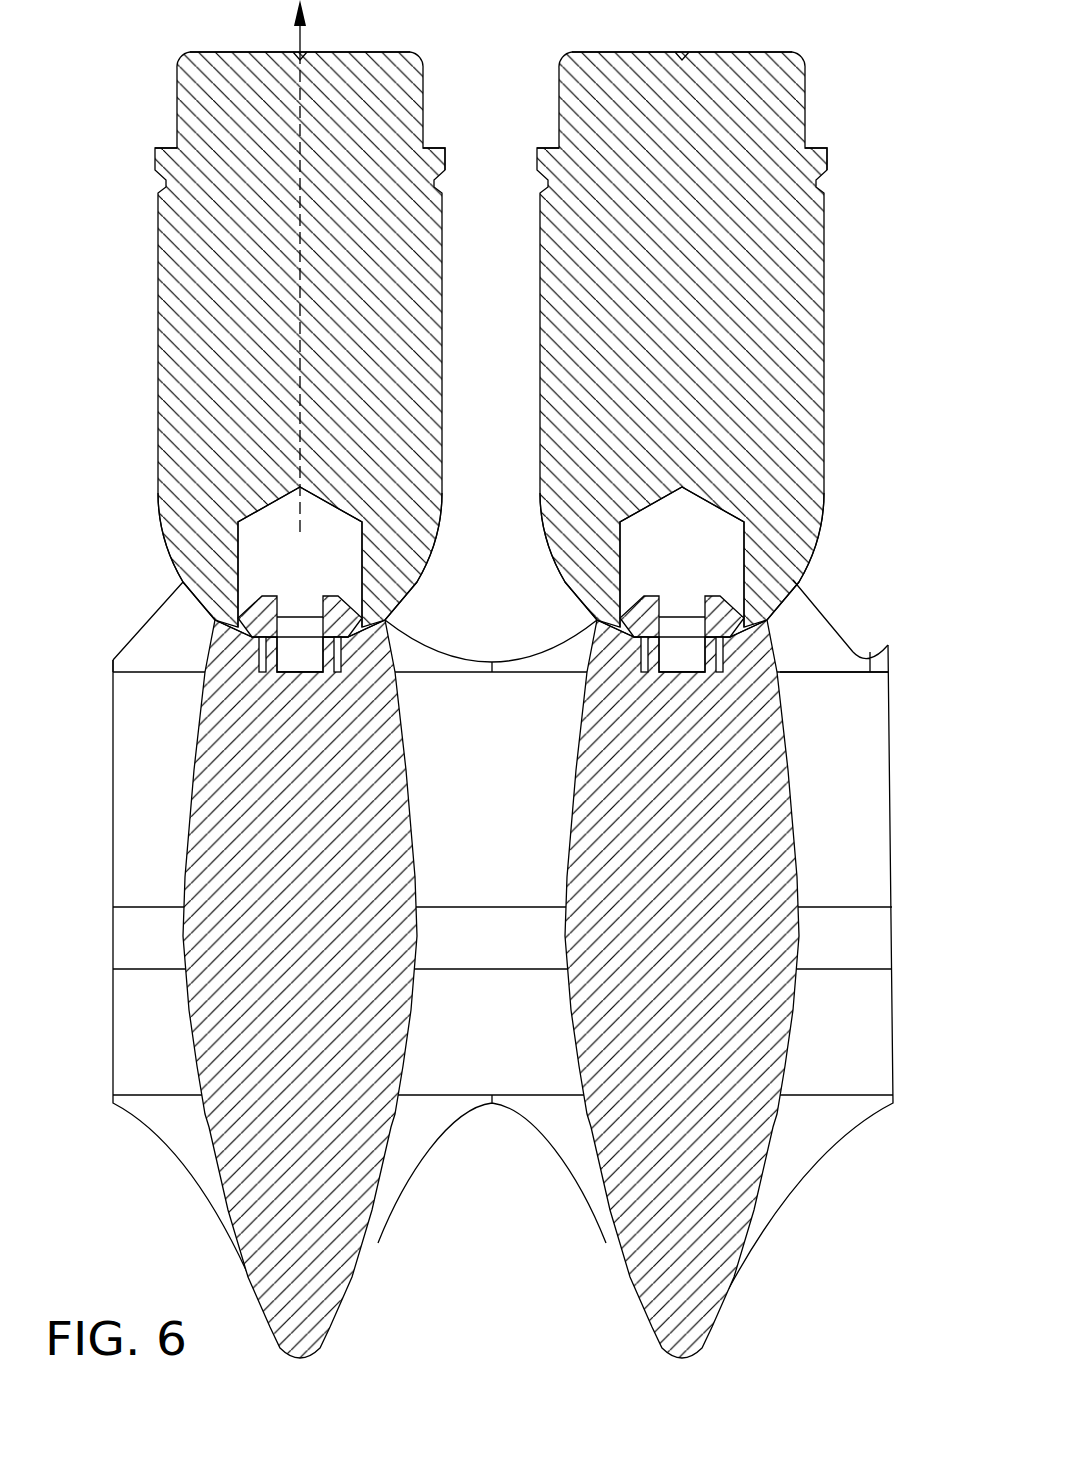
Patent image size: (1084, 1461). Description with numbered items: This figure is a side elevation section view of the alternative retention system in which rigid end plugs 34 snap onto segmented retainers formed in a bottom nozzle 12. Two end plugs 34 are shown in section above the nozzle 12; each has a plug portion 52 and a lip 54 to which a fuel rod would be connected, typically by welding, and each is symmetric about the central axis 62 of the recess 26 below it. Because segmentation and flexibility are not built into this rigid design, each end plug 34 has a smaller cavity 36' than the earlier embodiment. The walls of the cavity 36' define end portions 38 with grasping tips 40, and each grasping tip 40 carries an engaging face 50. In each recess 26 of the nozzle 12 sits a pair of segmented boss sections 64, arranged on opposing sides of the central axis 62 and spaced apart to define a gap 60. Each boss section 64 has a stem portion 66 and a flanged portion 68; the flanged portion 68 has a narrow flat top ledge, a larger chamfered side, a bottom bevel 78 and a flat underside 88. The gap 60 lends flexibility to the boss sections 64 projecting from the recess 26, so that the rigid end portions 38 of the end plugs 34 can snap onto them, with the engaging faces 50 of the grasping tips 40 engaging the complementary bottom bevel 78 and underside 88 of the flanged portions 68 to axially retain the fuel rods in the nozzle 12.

The bottom nozzle 12 is at (867, 757).
The recess 26 is at (208, 655).
The end plug 34 is at (824, 245).
The cavity 36' is at (560, 557).
The end portion 38 is at (183, 583).
The grasping tip 40 is at (770, 645).
The engaging face 50 is at (662, 630).
The plug portion 52 is at (806, 98).
The lip 54 is at (829, 156).
The gap 60 is at (780, 693).
The central axis 62 is at (302, 17).
The boss section 64 is at (748, 598).
The stem portion 66 is at (648, 675).
The flanged portion 68 is at (773, 633).
The bottom bevel 78 is at (650, 663).
The underside 88 is at (862, 660).